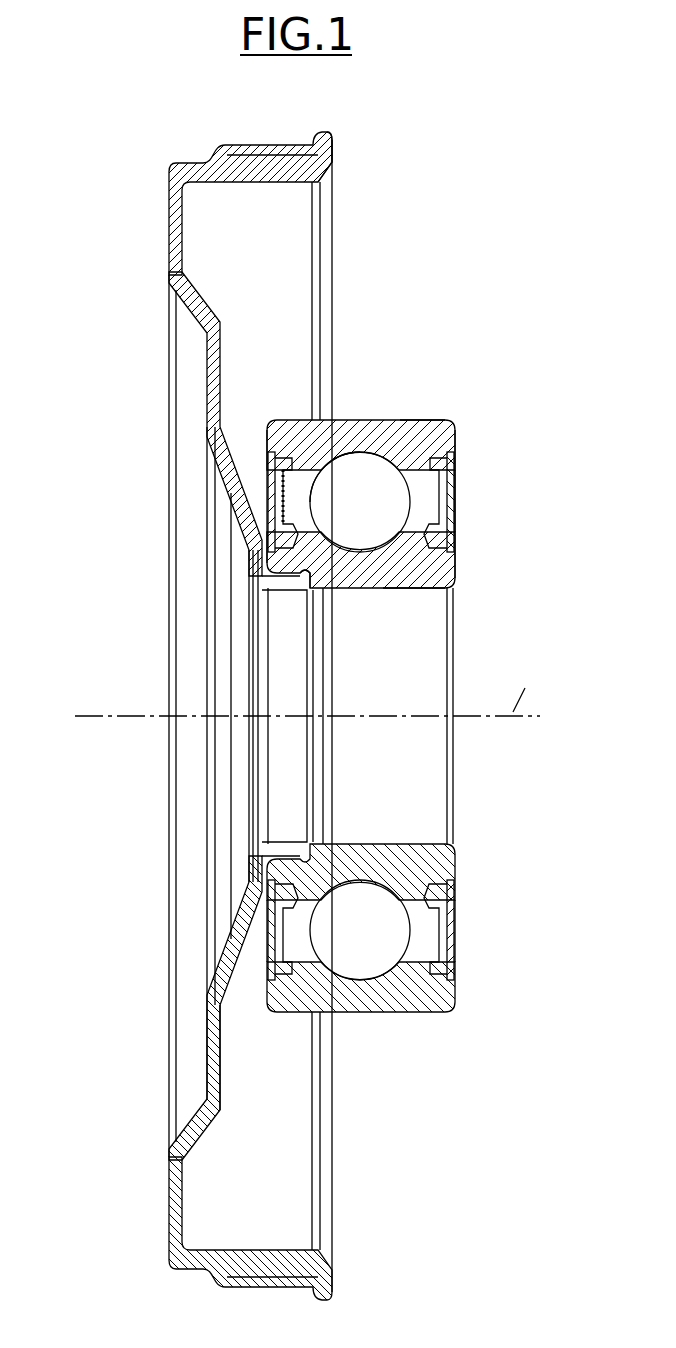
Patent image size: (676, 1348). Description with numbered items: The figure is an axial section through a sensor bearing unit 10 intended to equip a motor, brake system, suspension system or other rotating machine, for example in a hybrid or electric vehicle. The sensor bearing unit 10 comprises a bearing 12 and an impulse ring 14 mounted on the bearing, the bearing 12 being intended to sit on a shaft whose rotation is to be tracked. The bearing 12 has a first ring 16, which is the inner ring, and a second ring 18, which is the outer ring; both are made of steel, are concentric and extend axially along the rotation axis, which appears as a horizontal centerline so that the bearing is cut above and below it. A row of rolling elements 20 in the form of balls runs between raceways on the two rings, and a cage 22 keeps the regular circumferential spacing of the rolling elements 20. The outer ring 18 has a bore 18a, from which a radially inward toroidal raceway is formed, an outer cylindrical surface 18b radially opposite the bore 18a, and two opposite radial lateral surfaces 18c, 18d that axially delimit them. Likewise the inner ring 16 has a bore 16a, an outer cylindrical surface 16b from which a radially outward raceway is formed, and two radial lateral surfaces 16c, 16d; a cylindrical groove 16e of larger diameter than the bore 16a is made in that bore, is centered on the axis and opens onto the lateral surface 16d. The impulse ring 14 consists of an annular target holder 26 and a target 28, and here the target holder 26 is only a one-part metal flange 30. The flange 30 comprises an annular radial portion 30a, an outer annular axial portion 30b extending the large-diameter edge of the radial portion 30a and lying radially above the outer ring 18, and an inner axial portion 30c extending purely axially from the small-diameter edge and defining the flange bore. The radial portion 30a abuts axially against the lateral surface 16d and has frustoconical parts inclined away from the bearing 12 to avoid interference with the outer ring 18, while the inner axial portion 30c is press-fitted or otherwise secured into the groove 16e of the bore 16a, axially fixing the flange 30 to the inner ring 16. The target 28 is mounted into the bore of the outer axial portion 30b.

The sensor bearing unit 10 is at (467, 274).
The bearing 12 is at (468, 418).
The impulse ring 14 is at (160, 251).
The first ring 16 is at (436, 855).
The bore 16a is at (383, 589).
The outer cylindrical surface 16b is at (454, 520).
The radial lateral surface 16c is at (456, 572).
The radial lateral surface 16d is at (266, 562).
The cylindrical groove 16e is at (276, 598).
The second ring 18 is at (456, 998).
The bore 18a is at (313, 492).
The outer cylindrical surface 18b is at (431, 420).
The radial lateral surface 18c is at (456, 438).
The radial lateral surface 18d is at (266, 442).
The rolling elements 20 is at (373, 937).
The cage 22 is at (455, 942).
The target holder 26 is at (199, 1079).
The target 28 is at (334, 170).
The flange 30 is at (222, 977).
The radial portion 30a is at (237, 493).
The outer axial portion 30b is at (266, 150).
The inner axial portion 30c is at (292, 587).